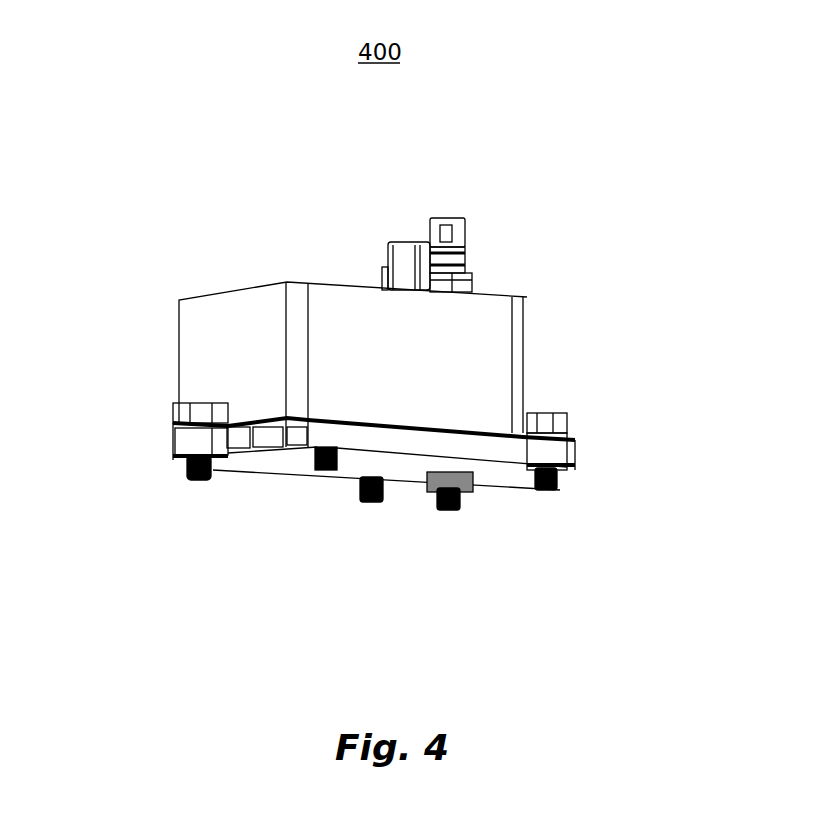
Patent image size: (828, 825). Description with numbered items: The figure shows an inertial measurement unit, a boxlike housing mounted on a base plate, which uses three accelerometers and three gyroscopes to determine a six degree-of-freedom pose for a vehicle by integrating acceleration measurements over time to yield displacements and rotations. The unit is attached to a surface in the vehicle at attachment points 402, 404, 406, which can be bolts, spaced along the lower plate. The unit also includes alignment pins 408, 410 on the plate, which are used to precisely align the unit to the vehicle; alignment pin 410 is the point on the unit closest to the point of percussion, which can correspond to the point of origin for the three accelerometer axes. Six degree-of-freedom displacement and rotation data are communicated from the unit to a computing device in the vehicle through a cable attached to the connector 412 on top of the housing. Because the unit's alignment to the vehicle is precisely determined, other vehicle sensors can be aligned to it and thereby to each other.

The attachment point 402 is at (198, 480).
The attachment point 404 is at (453, 510).
The attachment point 406 is at (543, 490).
The alignment pin 408 is at (323, 470).
The alignment pin 410 is at (371, 502).
The connector 412 is at (452, 220).